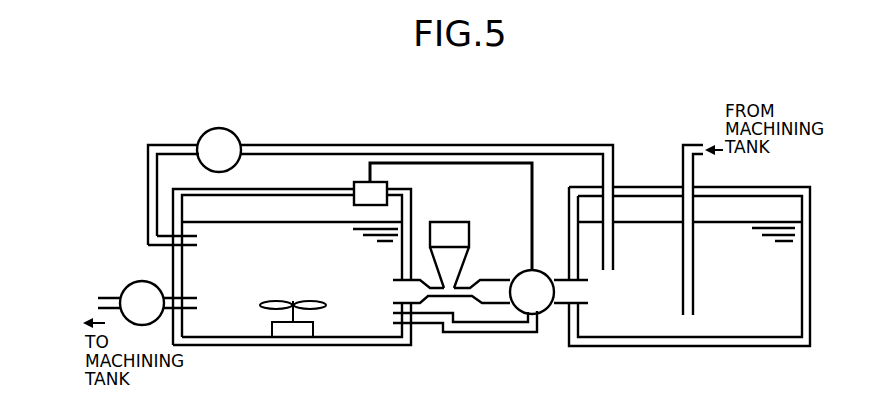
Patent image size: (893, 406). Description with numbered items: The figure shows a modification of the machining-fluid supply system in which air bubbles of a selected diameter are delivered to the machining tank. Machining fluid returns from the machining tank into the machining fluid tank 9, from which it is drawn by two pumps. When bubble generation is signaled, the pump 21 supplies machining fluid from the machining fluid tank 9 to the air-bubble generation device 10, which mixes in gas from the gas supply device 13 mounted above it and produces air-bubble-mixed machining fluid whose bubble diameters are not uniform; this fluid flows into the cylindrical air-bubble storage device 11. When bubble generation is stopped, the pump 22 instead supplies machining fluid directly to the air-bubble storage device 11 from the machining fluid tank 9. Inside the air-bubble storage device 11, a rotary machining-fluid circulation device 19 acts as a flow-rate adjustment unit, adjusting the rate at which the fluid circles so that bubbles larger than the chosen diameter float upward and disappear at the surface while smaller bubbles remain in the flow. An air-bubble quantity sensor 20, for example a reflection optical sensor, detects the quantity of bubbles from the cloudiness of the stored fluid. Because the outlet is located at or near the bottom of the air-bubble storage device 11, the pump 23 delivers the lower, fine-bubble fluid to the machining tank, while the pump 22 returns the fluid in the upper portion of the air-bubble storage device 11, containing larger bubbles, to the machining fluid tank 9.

The machining fluid tank 9 is at (672, 340).
The air-bubble generation device 10 is at (481, 286).
The air-bubble storage device 11 is at (305, 343).
The gas supply device 13 is at (464, 203).
The rotary machining-fluid circulation device 19 is at (307, 327).
The air-bubble quantity sensor 20 is at (362, 182).
The pump 21 is at (537, 268).
The pump 22 is at (236, 110).
The pump 23 is at (137, 282).